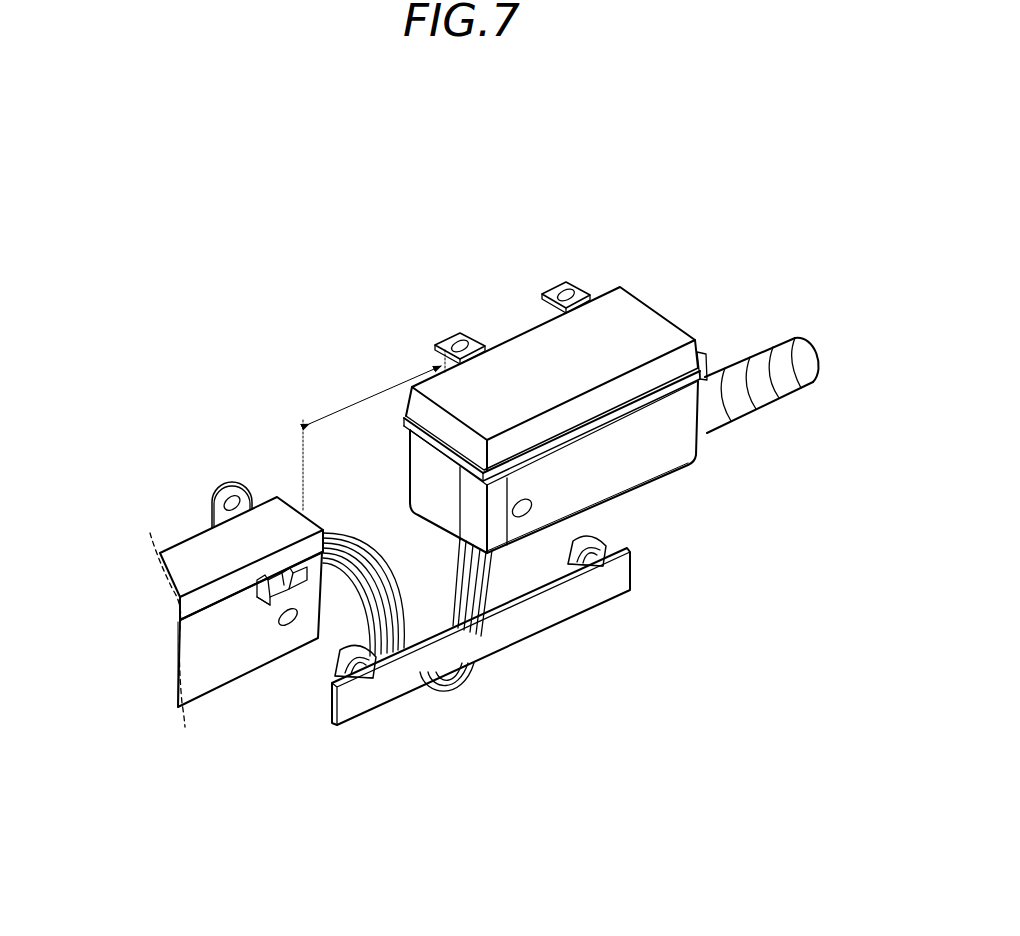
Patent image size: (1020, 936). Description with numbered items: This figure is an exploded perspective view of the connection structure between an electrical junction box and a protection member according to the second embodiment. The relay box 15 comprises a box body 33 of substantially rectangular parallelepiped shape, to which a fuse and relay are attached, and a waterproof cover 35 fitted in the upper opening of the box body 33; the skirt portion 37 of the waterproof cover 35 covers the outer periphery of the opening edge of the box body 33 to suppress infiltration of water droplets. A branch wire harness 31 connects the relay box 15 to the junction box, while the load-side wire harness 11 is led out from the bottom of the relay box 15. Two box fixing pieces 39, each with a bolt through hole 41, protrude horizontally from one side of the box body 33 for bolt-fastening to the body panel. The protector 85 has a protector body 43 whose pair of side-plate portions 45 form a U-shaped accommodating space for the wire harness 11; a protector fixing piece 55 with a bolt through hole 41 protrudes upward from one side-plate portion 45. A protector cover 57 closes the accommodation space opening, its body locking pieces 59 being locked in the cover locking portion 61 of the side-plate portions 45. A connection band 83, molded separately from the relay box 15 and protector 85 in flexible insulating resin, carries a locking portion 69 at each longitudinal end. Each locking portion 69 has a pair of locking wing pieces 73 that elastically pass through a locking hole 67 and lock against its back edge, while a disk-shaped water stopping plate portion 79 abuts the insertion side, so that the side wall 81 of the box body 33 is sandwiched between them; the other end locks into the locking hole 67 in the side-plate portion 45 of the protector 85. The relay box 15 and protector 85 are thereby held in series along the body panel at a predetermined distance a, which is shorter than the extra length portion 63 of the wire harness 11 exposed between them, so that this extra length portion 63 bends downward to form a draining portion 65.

The wire harness 11 is at (514, 619).
The relay box 15 is at (445, 473).
The branch wire harness 31 is at (741, 347).
The box body 33 is at (582, 467).
The waterproof cover 35 is at (606, 320).
The skirt portion 37 is at (703, 362).
The box fixing pieces 39 is at (363, 369).
The bolt through hole 41 is at (567, 283).
The protector body 43 is at (211, 602).
The side-plate portions 45 is at (215, 668).
The protector fixing pieces 55 is at (235, 482).
The protector cover 57 is at (266, 519).
The body locking pieces 59 is at (283, 575).
The cover locking portion 61 is at (265, 596).
The extra length portion 63 is at (362, 557).
The draining portion 65 is at (454, 693).
The locking hole 67 is at (529, 501).
The locking portion 69 is at (514, 648).
The locking wing pieces 73 is at (370, 655).
The water stopping plate portion 79 is at (356, 674).
The side wall 81 is at (634, 479).
The connection band 83 is at (567, 632).
The protector 85 is at (175, 682).
The predetermined distance a is at (374, 430).